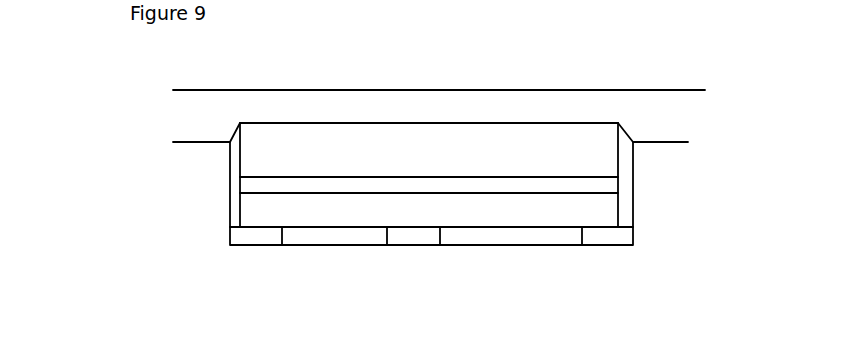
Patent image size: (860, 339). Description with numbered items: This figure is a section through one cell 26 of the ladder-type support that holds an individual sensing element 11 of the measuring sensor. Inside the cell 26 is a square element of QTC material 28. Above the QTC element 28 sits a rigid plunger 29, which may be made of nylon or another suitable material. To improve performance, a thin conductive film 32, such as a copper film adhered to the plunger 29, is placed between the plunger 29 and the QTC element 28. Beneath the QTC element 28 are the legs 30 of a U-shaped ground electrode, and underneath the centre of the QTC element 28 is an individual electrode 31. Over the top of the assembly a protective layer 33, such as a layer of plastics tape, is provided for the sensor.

The sensing element 11 is at (498, 107).
The cell 26 is at (653, 212).
The QTC element 28 is at (282, 210).
The plunger 29 is at (582, 142).
The legs of U-shaped ground electrode 30 is at (232, 245).
The individual electrode 31 is at (407, 245).
The conductive film 32 is at (293, 178).
The protective layer 33 is at (360, 90).